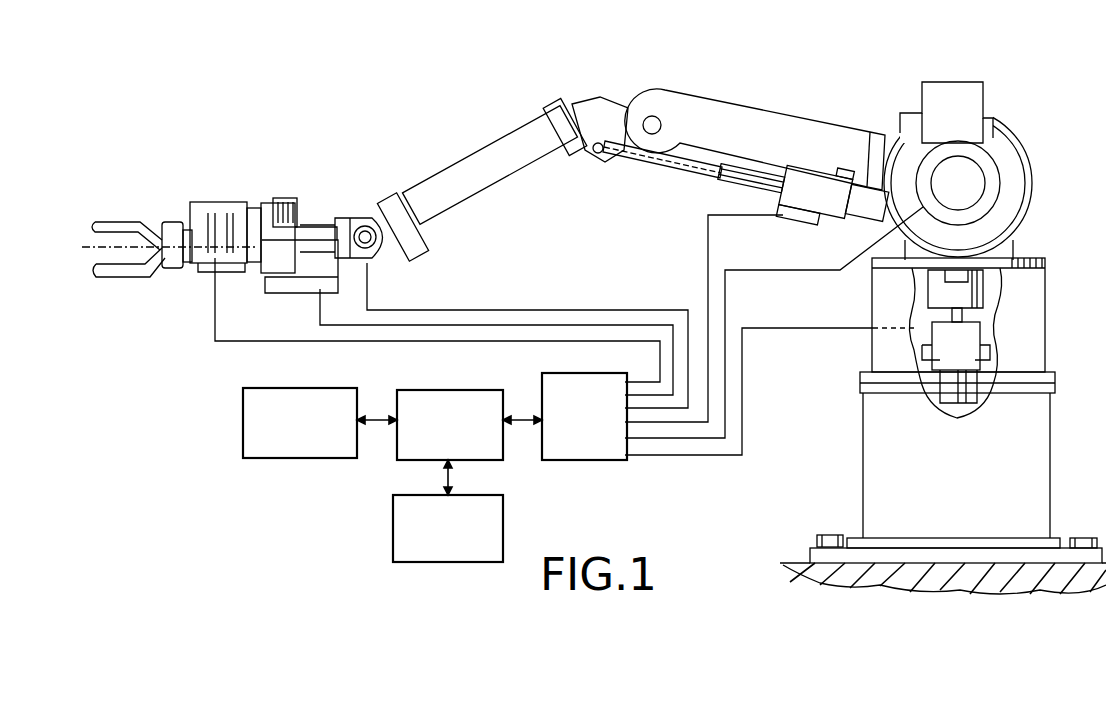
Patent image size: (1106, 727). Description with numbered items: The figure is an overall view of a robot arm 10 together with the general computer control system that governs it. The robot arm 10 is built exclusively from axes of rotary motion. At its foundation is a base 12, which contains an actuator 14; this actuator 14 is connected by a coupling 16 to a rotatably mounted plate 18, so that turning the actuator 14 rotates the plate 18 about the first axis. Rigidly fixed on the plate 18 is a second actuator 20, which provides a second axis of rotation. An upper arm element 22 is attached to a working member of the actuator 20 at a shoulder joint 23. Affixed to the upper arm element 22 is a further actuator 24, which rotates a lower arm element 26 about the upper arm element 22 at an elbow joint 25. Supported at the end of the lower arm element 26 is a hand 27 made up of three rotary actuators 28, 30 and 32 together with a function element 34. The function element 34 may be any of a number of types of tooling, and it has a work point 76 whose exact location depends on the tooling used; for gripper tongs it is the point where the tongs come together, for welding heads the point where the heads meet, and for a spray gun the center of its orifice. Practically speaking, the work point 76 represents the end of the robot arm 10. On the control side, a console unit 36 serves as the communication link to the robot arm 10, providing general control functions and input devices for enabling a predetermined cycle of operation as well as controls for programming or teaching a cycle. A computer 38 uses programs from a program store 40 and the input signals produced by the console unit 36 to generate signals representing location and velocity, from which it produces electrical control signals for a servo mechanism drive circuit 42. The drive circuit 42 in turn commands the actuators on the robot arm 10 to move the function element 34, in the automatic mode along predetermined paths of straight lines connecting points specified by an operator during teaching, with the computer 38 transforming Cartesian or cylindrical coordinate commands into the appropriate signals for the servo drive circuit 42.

The robot arm 10 is at (594, 165).
The base 12 is at (1050, 433).
The actuator 14 is at (986, 330).
The coupling 16 is at (979, 296).
The rotatably mounted plate 18 is at (1026, 263).
The actuator 20 is at (1000, 176).
The upper arm element 22 is at (763, 109).
The shoulder joint 23 is at (1004, 109).
The actuator 24 is at (810, 226).
The elbow joint 25 is at (648, 86).
The lower arm element 26 is at (507, 191).
The hand 27 is at (212, 184).
The rotary actuator 28 is at (376, 262).
The rotary actuator 30 is at (287, 205).
The rotary actuator 32 is at (198, 260).
The function element 34 is at (118, 290).
The console unit 36 is at (336, 459).
The computer 38 is at (477, 461).
The program store 40 is at (505, 524).
The servo mechanism drive circuit 42 is at (609, 463).
The work point 76 is at (125, 244).